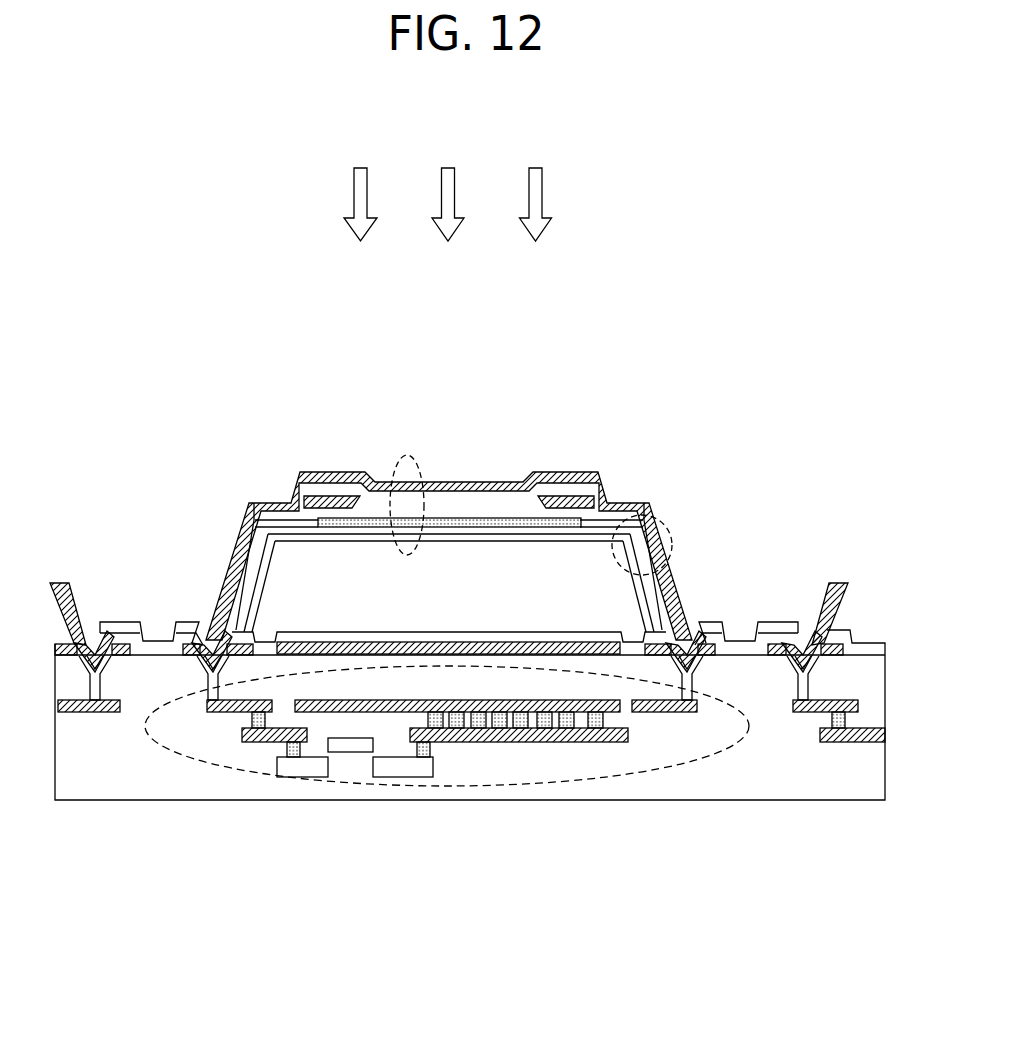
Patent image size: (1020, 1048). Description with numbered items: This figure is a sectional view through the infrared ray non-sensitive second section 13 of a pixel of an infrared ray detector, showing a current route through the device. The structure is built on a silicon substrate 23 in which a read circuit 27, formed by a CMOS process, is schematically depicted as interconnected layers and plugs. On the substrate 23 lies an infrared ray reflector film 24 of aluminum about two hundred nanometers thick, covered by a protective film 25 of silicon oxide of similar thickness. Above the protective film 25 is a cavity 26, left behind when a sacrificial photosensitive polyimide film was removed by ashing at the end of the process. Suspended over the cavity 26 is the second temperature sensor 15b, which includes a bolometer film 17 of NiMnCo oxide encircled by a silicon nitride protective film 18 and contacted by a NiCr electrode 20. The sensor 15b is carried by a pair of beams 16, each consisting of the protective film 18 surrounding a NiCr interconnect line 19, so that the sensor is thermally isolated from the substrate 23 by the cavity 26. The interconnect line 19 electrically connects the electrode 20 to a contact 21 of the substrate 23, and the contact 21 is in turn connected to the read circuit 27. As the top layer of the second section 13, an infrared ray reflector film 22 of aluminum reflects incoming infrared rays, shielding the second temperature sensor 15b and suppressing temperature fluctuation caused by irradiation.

The second section 13 is at (247, 337).
The second temperature sensor 15b is at (404, 460).
The beam 16 is at (652, 520).
The bolometer film 17 is at (513, 518).
The protective film 18 is at (436, 535).
The interconnect line 19 is at (250, 538).
The electrode 20 is at (350, 490).
The contact 21 is at (213, 634).
The infrared ray reflector film 22 is at (562, 474).
The substrate 23 is at (152, 786).
The infrared ray reflector film 24 is at (617, 645).
The protective film 25 is at (587, 637).
The cavity 26 is at (453, 542).
The read circuit 27 is at (652, 773).